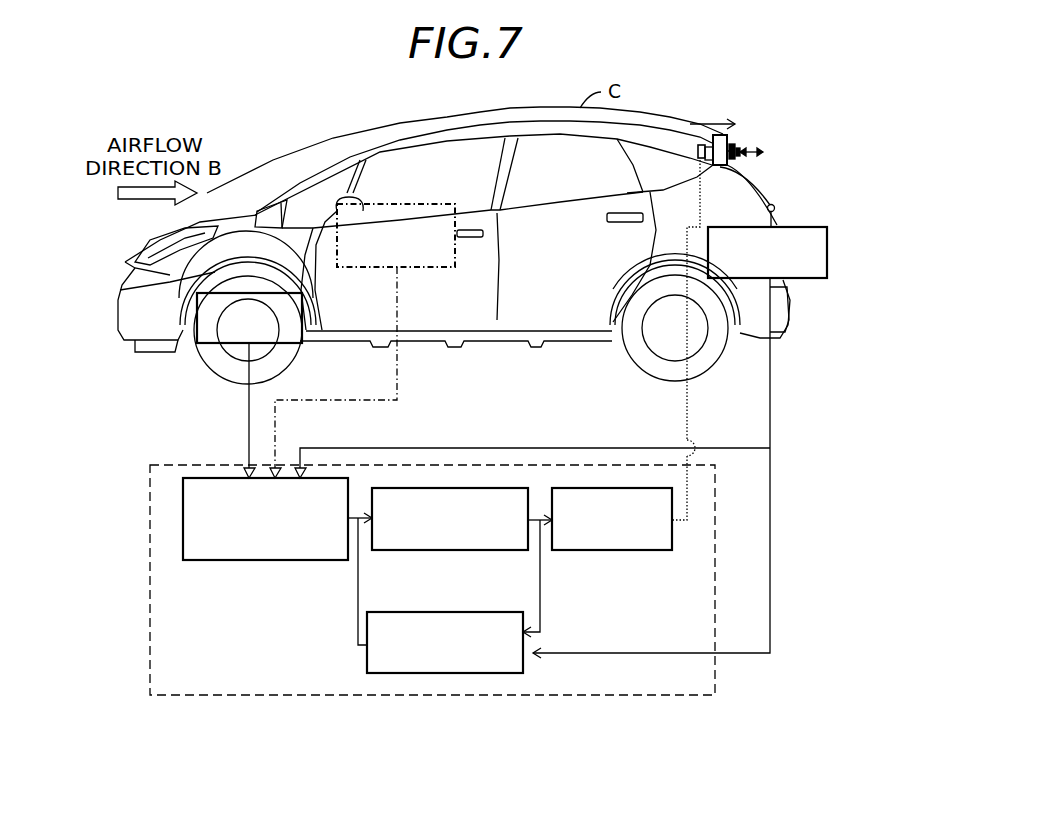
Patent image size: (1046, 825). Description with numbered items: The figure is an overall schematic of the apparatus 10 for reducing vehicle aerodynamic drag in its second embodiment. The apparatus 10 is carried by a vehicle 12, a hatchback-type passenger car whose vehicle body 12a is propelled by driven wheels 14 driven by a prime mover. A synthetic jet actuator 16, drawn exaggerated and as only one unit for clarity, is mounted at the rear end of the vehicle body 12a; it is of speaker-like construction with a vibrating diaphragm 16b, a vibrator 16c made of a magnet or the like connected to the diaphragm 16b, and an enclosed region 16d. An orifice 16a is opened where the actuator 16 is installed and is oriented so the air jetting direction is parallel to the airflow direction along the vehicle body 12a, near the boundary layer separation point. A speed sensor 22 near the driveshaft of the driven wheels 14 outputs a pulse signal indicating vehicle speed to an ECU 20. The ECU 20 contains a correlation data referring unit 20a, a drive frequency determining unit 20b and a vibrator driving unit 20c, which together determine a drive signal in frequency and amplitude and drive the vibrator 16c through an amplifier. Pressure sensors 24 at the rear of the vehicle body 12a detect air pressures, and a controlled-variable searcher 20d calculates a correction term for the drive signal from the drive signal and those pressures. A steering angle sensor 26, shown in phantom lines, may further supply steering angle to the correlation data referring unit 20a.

The apparatus for reducing vehicle aerodynamic drag 10 is at (812, 460).
The vehicle 12 is at (108, 280).
The vehicle body 12a is at (147, 250).
The driven wheels 14 is at (212, 375).
The synthetic jet actuator 16 is at (725, 168).
The orifice 16a is at (733, 136).
The vibrating diaphragm 16b is at (697, 145).
The vibrator 16c is at (702, 160).
The enclosed region 16d is at (775, 209).
The ECU 20 is at (432, 595).
The correlation data referring unit 20a is at (282, 560).
The drive frequency determining unit 20b is at (448, 550).
The vibrator driving unit 20c is at (603, 550).
The controlled-variable searcher 20d is at (510, 673).
The speed sensor 22 is at (303, 308).
The pressure sensor 24 is at (828, 250).
The steering angle sensor 26 is at (403, 268).